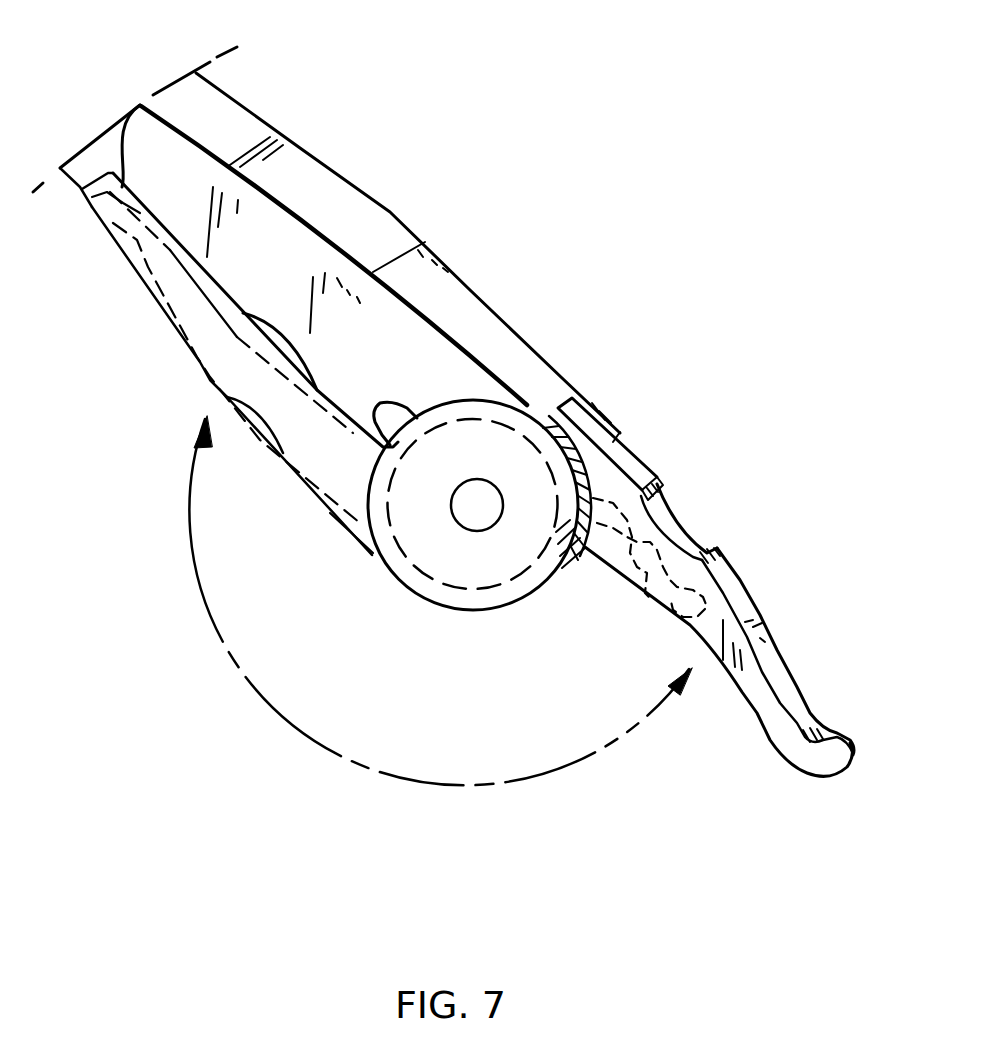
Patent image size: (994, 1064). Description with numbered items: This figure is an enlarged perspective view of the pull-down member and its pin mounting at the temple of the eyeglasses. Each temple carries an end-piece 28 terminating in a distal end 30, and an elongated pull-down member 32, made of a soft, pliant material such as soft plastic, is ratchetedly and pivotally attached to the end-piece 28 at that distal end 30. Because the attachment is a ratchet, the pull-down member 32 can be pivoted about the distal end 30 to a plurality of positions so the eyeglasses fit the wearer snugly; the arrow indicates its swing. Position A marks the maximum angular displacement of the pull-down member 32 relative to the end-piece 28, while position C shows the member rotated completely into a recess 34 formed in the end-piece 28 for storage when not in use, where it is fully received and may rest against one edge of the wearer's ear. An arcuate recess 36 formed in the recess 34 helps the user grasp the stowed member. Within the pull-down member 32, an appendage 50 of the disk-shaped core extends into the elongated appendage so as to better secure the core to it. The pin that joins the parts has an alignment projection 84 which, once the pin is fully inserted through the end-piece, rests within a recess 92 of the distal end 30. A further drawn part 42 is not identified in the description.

The end-piece 28 is at (172, 107).
The distal end 30 is at (562, 378).
The recess 34 is at (114, 122).
The pull-down member 32 is at (327, 465).
The arcuate recess 36 is at (273, 338).
The position C is at (140, 260).
The alignment projection 84 is at (400, 437).
The recess 92 is at (400, 412).
The bar 42 is at (667, 522).
The appendage 50 is at (644, 603).
The position A is at (815, 710).